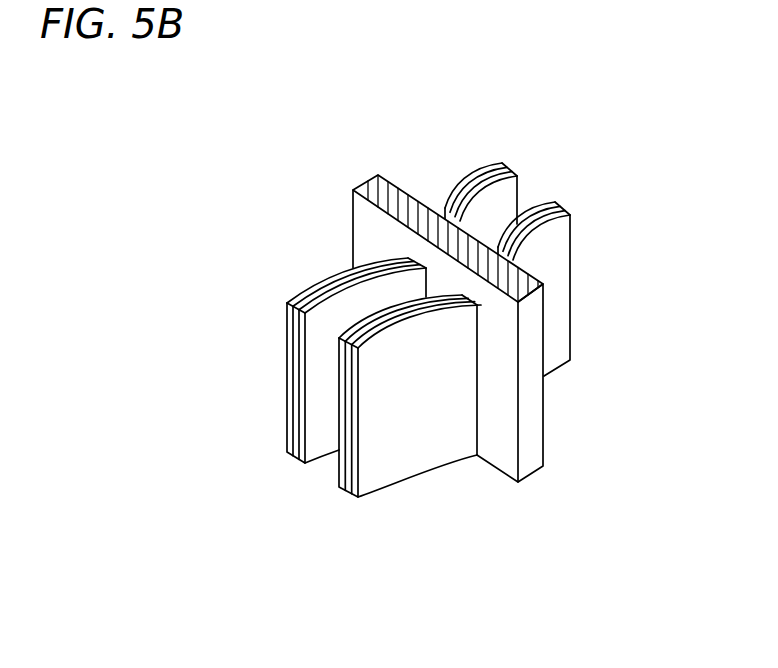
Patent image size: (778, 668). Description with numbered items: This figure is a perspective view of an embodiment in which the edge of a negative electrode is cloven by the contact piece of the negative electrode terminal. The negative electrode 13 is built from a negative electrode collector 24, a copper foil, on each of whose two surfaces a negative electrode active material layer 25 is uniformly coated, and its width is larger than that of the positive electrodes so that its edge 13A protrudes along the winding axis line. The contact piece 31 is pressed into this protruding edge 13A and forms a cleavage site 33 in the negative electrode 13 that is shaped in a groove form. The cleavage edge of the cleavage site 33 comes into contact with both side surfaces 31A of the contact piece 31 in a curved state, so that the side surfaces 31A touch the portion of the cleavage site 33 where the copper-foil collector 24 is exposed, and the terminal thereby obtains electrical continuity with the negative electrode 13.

The negative electrode 13 is at (386, 450).
The edge of the negative electrode 13A is at (335, 433).
The negative electrode collector 24 is at (340, 353).
The negative electrode active material layer 25 is at (420, 361).
The contact piece 31 is at (373, 173).
The side surfaces of the contact piece 31A is at (367, 218).
The cleavage site 33 is at (482, 386).